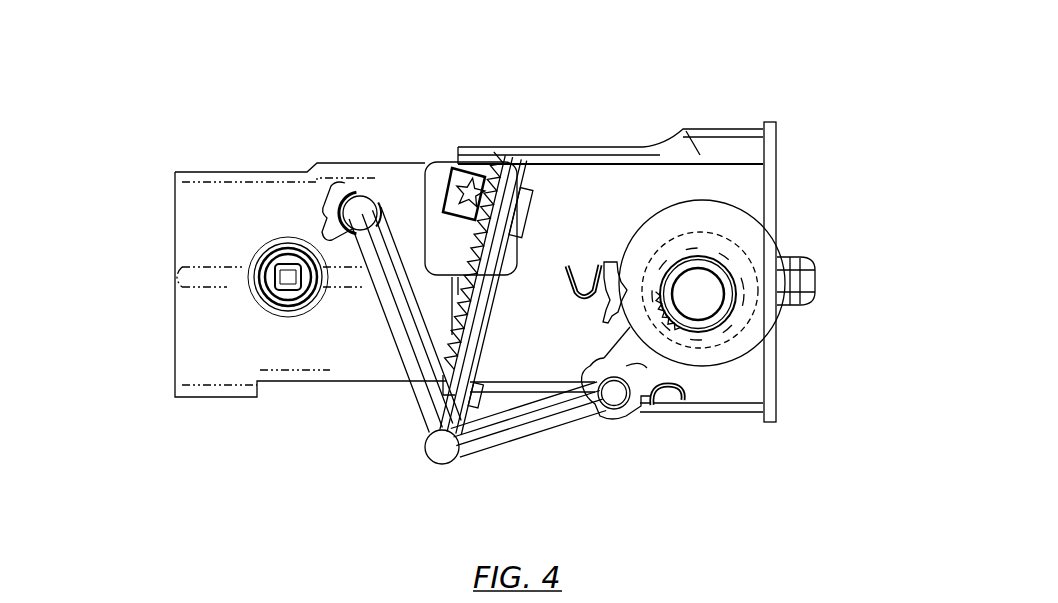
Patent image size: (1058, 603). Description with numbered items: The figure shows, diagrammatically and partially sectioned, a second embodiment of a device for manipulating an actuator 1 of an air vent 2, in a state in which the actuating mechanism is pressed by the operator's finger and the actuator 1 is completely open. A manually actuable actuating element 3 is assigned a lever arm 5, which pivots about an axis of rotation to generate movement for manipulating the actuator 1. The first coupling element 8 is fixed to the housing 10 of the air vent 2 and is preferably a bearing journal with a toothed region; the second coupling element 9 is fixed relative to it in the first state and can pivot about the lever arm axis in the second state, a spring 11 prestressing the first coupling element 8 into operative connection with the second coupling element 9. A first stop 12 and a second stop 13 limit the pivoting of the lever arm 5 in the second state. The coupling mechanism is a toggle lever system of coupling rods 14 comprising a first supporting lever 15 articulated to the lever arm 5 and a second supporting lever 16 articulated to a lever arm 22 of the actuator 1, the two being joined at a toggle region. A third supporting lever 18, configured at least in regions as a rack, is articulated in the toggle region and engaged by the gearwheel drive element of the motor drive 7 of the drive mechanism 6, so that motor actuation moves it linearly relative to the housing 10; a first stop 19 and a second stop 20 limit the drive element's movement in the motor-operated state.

The actuator 1 is at (205, 270).
The air vent 2 is at (834, 156).
The actuating element 3 is at (743, 233).
The lever arm of the actuating element 5 is at (648, 361).
The drive mechanism 6 is at (437, 192).
The motor drive 7 is at (466, 172).
The first coupling element 8 is at (720, 313).
The second coupling element 9 is at (677, 335).
The housing 10 is at (338, 163).
The spring 11 is at (613, 277).
The first stop 12 is at (665, 402).
The second stop 13 is at (596, 262).
The coupling rods 14 is at (463, 346).
The first supporting lever 15 is at (565, 417).
The second supporting lever 16 is at (410, 340).
The third supporting lever 18 is at (449, 396).
The first stop 19 is at (522, 178).
The second stop 20 is at (478, 396).
The lever arm of the actuator 22 is at (320, 218).